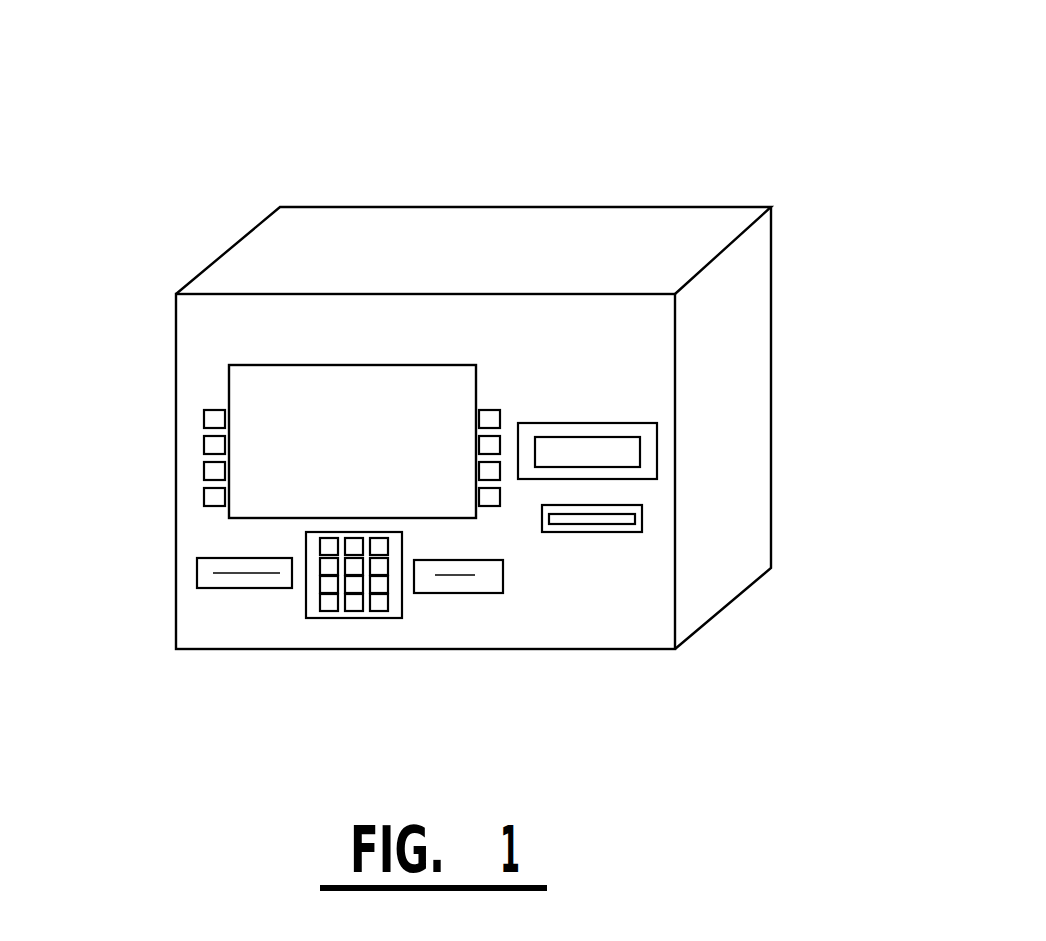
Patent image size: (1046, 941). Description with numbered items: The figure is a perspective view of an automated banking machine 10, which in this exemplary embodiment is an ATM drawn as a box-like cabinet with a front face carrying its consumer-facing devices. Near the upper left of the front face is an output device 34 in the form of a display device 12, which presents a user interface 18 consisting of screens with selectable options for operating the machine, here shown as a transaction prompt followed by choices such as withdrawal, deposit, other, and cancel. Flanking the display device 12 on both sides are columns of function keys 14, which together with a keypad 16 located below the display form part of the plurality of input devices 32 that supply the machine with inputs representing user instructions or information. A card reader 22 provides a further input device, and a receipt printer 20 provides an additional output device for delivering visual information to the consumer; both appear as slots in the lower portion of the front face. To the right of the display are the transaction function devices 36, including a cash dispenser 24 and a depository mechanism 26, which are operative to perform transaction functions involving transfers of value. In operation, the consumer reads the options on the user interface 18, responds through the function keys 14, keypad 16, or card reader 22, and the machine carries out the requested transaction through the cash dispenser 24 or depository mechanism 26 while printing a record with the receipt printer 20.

The automated banking machine 10 is at (538, 142).
The display device 12 is at (230, 383).
The function keys 14 is at (206, 526).
The keypad 16 is at (317, 618).
The user interface 18 is at (441, 372).
The receipt printer 20 is at (230, 588).
The card reader 22 is at (485, 593).
The cash dispenser 24 is at (657, 457).
The depository mechanism 26 is at (642, 523).
The input devices 32 is at (352, 645).
The output device 34 is at (295, 345).
The transaction function devices 36 is at (599, 567).